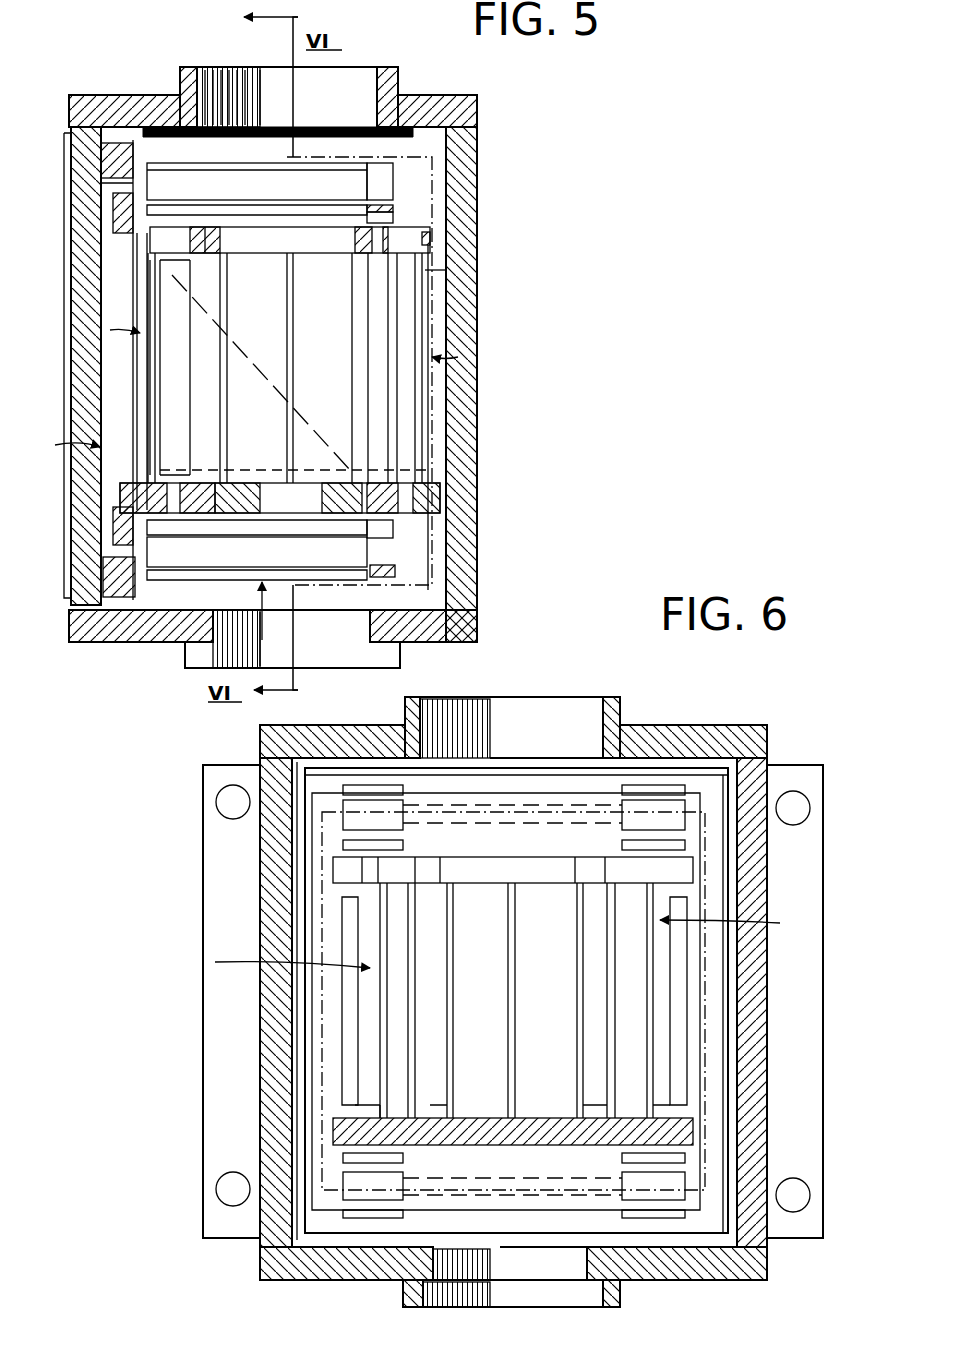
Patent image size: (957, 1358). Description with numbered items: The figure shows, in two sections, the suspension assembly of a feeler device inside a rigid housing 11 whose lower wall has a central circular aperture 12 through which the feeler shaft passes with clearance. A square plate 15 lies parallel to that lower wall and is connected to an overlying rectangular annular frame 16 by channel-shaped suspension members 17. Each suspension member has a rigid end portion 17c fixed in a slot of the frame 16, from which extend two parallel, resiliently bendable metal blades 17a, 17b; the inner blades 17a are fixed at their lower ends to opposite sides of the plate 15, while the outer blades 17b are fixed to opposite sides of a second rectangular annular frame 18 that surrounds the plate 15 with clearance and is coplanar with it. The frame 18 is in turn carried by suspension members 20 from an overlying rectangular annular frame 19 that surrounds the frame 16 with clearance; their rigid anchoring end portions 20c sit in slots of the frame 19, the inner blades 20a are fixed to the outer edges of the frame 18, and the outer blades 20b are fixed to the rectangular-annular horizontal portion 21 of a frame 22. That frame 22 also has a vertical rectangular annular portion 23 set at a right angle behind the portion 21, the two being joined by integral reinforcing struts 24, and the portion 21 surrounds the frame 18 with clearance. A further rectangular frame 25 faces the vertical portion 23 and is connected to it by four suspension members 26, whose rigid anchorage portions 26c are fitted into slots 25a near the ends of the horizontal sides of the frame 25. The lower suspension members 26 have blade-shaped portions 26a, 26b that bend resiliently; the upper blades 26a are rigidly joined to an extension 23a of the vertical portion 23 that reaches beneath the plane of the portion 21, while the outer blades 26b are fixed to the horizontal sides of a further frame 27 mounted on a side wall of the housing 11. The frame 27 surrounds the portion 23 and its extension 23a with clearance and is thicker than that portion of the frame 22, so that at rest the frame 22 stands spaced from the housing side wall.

In FIG. 5, the housing 11 is at (462, 332).
In FIG. 6, the housing 11 is at (278, 1001).
In FIG. 5, the central circular aperture 12 is at (215, 640).
In FIG. 6, the central circular aperture 12 is at (445, 1262).
In FIG. 5, the square plate 15 is at (340, 525).
In FIG. 5, the rectangular annular frame 16 is at (210, 200).
In FIG. 5, the suspension members 17 is at (365, 385).
In FIG. 6, the suspension members 17 is at (505, 1000).
In FIG. 6, the inner blades 17a is at (416, 950).
In FIG. 6, the outer blades 17b is at (390, 988).
In FIG. 6, the rigid end portions 17c is at (448, 855).
In FIG. 5, the second rectangular annular frame 18 is at (195, 520).
In FIG. 5, the rectangular annular frame 19 is at (150, 243).
In FIG. 5, the suspension members 20 is at (523, 360).
In FIG. 6, the suspension members 20 is at (545, 1022).
In FIG. 5, the inner blades 20a is at (165, 400).
In FIG. 5, the outer blades 20b is at (150, 290).
In FIG. 5, the rigid anchoring end portions 20c is at (170, 227).
In FIG. 5, the horizontal portion 21 is at (155, 495).
In FIG. 6, the horizontal portion 21 is at (560, 1130).
In FIG. 5, the frame 22 is at (78, 371).
In FIG. 5, the vertical portion 23 is at (120, 205).
In FIG. 5, the extension 23a is at (120, 528).
In FIG. 5, the reinforcing struts 24 is at (180, 303).
In FIG. 6, the rectangular frame 25 is at (718, 800).
In FIG. 5, the slots 25a is at (400, 573).
In FIG. 5, the suspension members 26 is at (322, 134).
In FIG. 5, the upper blades 26a is at (262, 200).
In FIG. 5, the outer blades 26b is at (236, 165).
In FIG. 5, the rigid anchorage portions 26c is at (398, 180).
In FIG. 6, the rigid anchorage portions 26c is at (355, 812).
In FIG. 5, the further frame 27 is at (113, 150).
In FIG. 6, the further frame 27 is at (600, 785).